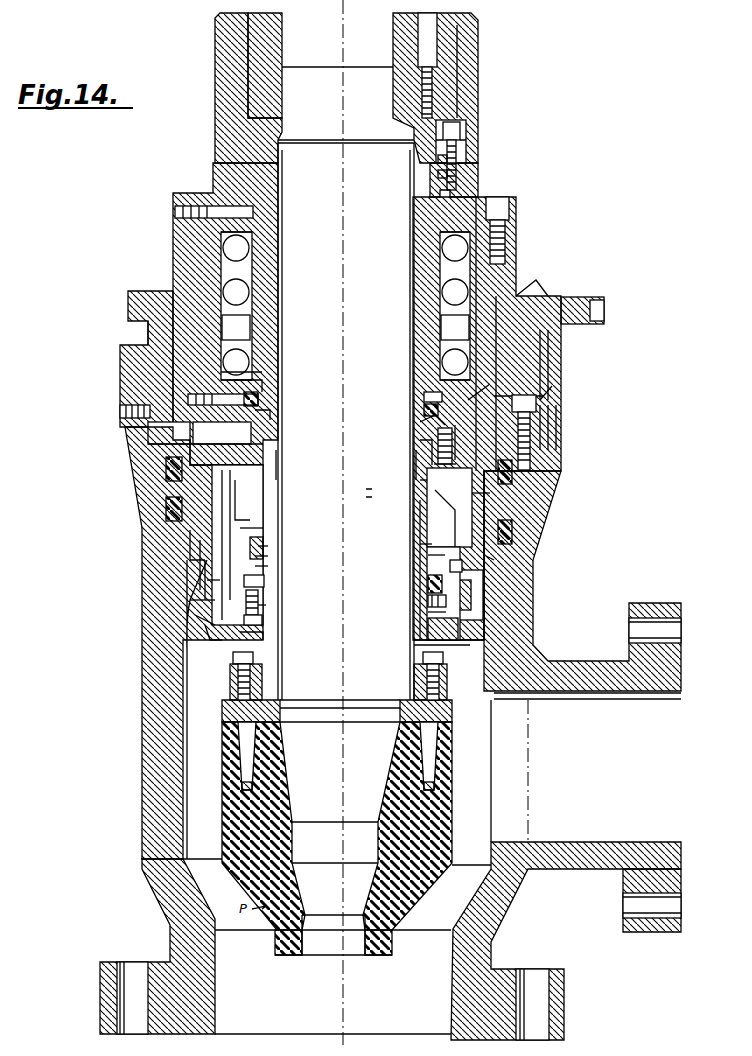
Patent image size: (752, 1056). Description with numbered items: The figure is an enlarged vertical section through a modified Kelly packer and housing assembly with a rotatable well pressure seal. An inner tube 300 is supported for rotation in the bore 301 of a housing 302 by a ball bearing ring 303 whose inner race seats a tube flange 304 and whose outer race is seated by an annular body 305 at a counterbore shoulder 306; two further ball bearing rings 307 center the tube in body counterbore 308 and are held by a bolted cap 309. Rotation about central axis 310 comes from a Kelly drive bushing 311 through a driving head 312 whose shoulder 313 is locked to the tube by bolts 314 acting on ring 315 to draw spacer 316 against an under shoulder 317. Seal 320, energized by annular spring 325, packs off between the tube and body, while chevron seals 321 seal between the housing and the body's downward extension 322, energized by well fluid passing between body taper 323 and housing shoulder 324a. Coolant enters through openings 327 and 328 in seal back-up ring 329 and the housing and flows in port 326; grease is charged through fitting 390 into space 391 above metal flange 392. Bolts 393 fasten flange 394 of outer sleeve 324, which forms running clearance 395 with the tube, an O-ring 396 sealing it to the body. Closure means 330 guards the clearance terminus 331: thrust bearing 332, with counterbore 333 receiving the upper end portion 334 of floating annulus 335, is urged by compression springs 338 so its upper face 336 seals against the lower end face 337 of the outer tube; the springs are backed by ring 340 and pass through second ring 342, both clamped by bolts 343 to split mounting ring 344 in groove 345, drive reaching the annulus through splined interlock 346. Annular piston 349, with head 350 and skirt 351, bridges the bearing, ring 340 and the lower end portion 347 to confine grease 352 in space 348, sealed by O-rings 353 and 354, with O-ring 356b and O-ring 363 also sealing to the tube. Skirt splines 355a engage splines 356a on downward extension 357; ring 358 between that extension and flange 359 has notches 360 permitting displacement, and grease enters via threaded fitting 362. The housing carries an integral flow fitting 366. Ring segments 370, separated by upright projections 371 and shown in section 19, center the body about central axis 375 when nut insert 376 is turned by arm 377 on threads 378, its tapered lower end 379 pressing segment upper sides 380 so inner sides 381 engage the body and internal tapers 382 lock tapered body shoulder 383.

The inner tube 300 is at (415, 524).
The bore 301 is at (187, 680).
The housing 302 is at (150, 780).
The ball bearing ring 303 is at (420, 370).
The tube flange 304 is at (440, 332).
The annular body 305 is at (435, 420).
The counterbore shoulder 306 is at (462, 420).
The ball bearing rings 307 is at (420, 300).
The body counterbore 308 is at (500, 284).
The cap 309 is at (491, 194).
The central axis 310 is at (340, 462).
The Kelly drive bushing 311 is at (372, 74).
The driving head 312 is at (478, 50).
The shoulder 313 is at (432, 136).
The bolts 314 is at (457, 152).
The ring 315 is at (478, 180).
The spacer 316 is at (438, 176).
The under shoulder 317 is at (438, 159).
The section line 19 is at (514, 384).
The annular elastomer seal 320 is at (424, 398).
The annular elastomer seals 321 is at (528, 466).
The downward extension 322 is at (490, 498).
The body taper 323 is at (490, 545).
The outer sleeve 324 is at (425, 485).
The housing shoulder 324a is at (493, 556).
The annular spring 325 is at (424, 410).
The port 326 is at (222, 433).
The opening 327 is at (169, 433).
The opening 328 is at (120, 412).
The seal back-up ring 329 is at (150, 455).
The closure means 330 is at (222, 634).
The clearance terminus 331 is at (428, 555).
The annular thrust bearing 332 is at (262, 548).
The lower counterbore 333 is at (258, 556).
The upper end portion 334 is at (262, 566).
The floating annulus 335 is at (262, 580).
The bearing upper face 336 is at (255, 540).
The lower end face 337 is at (252, 530).
The compression springs 338 is at (428, 612).
The ring 340 is at (428, 628).
The second ring 342 is at (428, 599).
The bolts 343 is at (265, 620).
The split mounting ring 344 is at (262, 598).
The groove 345 is at (262, 608).
The splined interlock 346 is at (205, 585).
The lower end portion 347 is at (412, 544).
The confined annular space 348 is at (250, 520).
The annular piston 349 is at (472, 497).
The head 350 is at (440, 488).
The skirt 351 is at (457, 600).
The grease 352 is at (258, 503).
The rubber O-ring 353 is at (357, 493).
The rubber O-ring 354 is at (452, 640).
The splines 355a is at (200, 538).
The splines 356a is at (205, 570).
The O-ring 356b is at (268, 632).
The downward extension 357 is at (200, 555).
The ring 358 is at (200, 600).
The flange 359 is at (200, 618).
The ring notches 360 is at (463, 578).
The threaded fitting 362 is at (450, 565).
The O-ring 363 is at (428, 580).
The flow fitting 366 is at (655, 852).
The ring segments 370 is at (165, 375).
The upright projections 371 is at (561, 368).
The central axis 375 is at (345, 250).
The annular nut insert 376 is at (548, 296).
The arm 377 is at (604, 302).
The threads 378 is at (561, 347).
The tapered lower end 379 is at (165, 355).
The tapered upper sides 380 is at (175, 345).
The segment inner sides 381 is at (255, 372).
The segment internal tapers 382 is at (262, 386).
The tapered body shoulder 383 is at (180, 382).
The fitting 390 is at (200, 400).
The space 391 is at (262, 404).
The annular metal flange 392 is at (262, 414).
The bolts 393 is at (455, 437).
The flange 394 is at (455, 452).
The running clearance 395 is at (255, 490).
The O-ring 396 is at (428, 450).